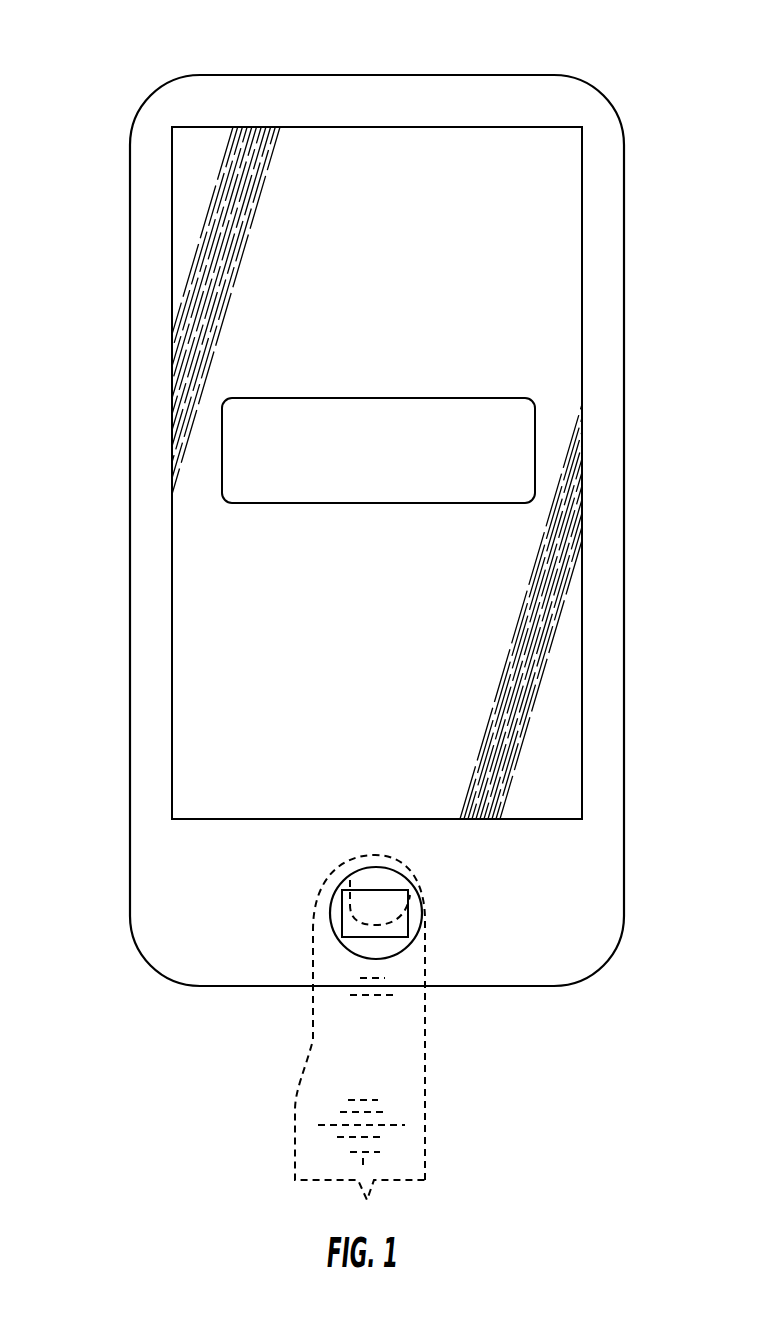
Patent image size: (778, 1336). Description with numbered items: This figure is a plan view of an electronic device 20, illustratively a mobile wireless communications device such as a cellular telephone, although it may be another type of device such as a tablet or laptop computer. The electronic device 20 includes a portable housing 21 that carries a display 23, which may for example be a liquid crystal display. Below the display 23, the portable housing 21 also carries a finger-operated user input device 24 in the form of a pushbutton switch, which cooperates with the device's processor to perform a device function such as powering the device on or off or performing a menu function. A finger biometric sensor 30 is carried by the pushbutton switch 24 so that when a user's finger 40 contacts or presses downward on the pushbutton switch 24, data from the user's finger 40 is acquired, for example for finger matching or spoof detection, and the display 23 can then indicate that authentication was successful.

The electronic device 20 is at (112, 95).
The portable housing 21 is at (130, 246).
The display 23 is at (172, 293).
The finger-operated user input device 24 is at (337, 937).
The finger biometric sensor 30 is at (342, 902).
The user's finger 40 is at (312, 1017).